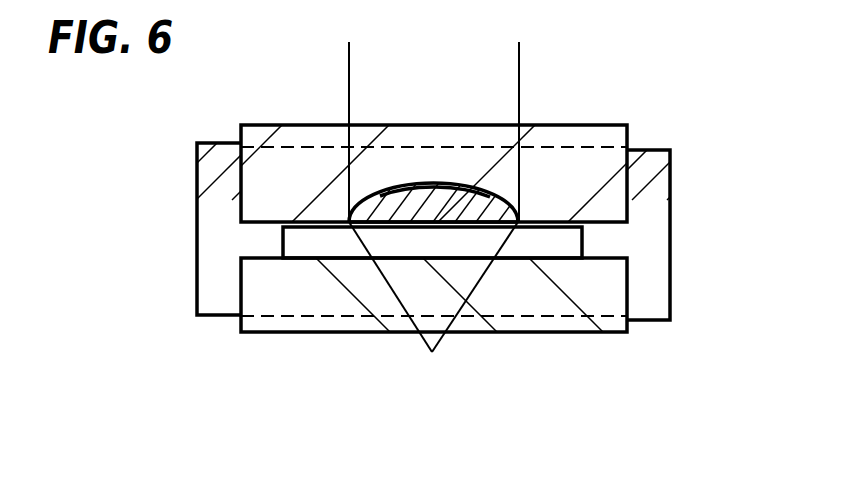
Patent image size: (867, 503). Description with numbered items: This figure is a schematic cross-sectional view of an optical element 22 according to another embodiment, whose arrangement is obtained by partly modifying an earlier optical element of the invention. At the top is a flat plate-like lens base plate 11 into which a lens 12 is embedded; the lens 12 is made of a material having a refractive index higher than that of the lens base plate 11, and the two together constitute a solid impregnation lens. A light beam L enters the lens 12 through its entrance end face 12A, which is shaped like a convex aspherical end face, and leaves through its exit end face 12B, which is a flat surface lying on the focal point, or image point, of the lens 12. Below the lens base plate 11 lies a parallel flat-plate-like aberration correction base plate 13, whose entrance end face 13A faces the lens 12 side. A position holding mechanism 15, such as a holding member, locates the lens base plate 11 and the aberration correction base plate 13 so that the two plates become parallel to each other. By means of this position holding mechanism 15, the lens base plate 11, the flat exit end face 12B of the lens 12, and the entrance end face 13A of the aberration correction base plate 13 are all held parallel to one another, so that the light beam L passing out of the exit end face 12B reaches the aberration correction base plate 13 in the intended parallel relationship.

The lens base plate 11 is at (607, 142).
The lens 12 is at (493, 215).
The entrance end face 12A is at (436, 176).
The exit end face 12B is at (418, 240).
The aberration correction base plate 13 is at (589, 283).
The entrance end face 13A is at (478, 254).
The position holding mechanism 15 is at (228, 195).
The optical element 22 is at (160, 363).
The light beam L is at (521, 80).